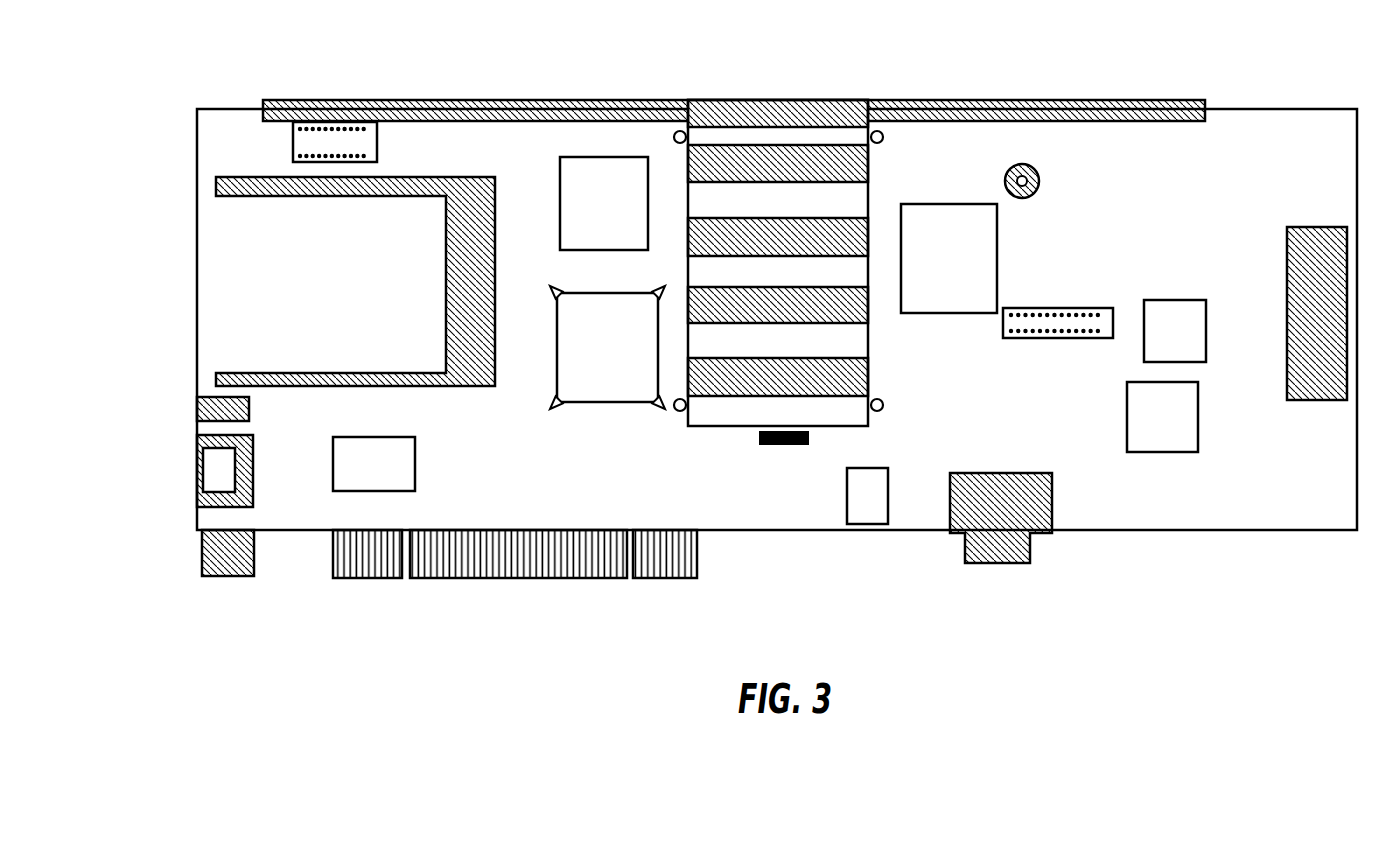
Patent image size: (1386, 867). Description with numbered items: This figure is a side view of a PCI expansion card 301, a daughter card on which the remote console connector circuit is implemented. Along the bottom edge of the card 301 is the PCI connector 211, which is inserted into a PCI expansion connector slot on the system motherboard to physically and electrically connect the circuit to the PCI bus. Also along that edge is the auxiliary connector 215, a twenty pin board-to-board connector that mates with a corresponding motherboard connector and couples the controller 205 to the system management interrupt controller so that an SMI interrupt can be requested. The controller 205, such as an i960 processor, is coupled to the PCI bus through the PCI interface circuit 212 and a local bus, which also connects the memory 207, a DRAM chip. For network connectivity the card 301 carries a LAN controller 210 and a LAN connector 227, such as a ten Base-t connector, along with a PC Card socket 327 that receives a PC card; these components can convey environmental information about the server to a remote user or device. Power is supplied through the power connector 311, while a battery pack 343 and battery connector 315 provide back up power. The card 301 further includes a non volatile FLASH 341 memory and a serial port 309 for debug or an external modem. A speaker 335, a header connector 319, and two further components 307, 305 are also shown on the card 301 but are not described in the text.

The PCI expansion card 301 is at (1340, 150).
The serial port 309 is at (360, 127).
The PC Card socket 327 is at (355, 281).
The power connector 311 is at (197, 398).
The LAN connector 227 is at (197, 508).
The LAN controller 210 is at (415, 470).
The PCI connector 211 is at (590, 580).
The memory 207 is at (560, 187).
The PCI interface circuit 212 is at (608, 402).
The battery pack 343 is at (790, 120).
The battery connector 315 is at (808, 438).
The FLASH 341 is at (862, 524).
The auxiliary connector 215 is at (1030, 553).
The controller 205 is at (997, 237).
The speaker 335 is at (1035, 192).
The header connector 319 is at (1062, 340).
The component 307 is at (1165, 300).
The component 305 is at (1198, 423).